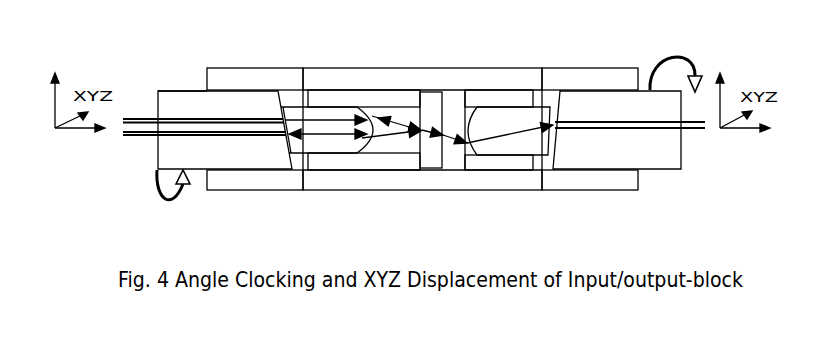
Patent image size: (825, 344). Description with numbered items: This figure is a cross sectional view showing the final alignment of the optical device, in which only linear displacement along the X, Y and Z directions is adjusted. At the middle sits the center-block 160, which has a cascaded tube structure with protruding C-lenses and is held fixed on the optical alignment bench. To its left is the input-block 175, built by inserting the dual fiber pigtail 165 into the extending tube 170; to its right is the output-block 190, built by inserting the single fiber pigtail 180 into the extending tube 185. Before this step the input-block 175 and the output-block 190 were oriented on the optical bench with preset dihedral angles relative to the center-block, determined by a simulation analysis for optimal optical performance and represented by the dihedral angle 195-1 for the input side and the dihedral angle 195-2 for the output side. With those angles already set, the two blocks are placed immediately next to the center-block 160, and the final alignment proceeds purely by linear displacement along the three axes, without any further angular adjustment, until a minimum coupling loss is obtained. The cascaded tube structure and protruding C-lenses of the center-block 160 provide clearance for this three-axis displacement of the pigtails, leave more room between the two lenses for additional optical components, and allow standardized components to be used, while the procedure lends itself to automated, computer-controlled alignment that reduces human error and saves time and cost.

The center-block 160 is at (350, 82).
The dual fiber pigtail 165 is at (172, 111).
The extending tube 170 is at (233, 82).
The input-block 175 is at (203, 90).
The single fiber pigtail 180 is at (653, 148).
The extending tube 185 is at (567, 82).
The output-block 190 is at (650, 62).
The dihedral angle 195-1 is at (183, 195).
The dihedral angle 195-2 is at (697, 70).